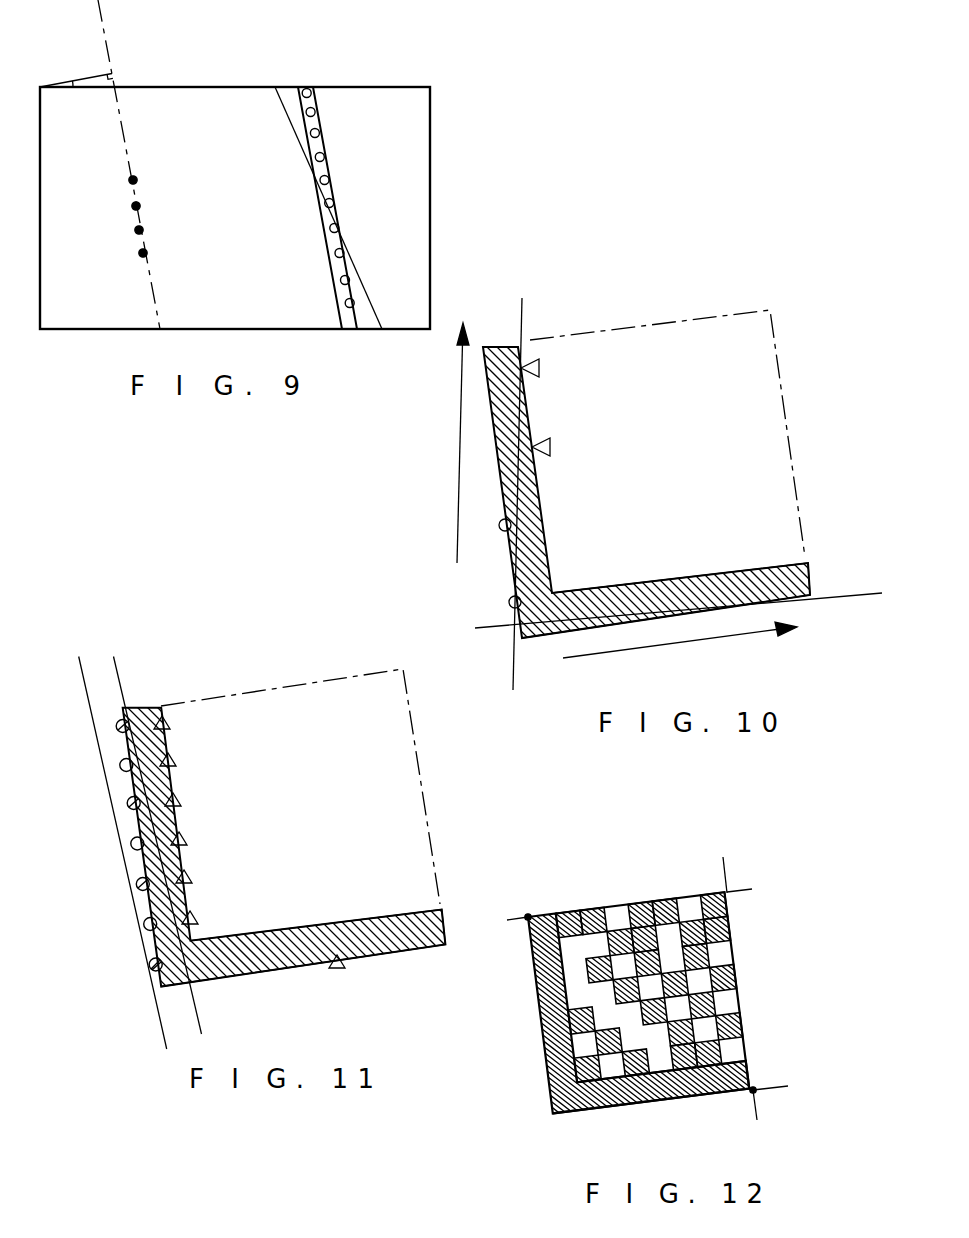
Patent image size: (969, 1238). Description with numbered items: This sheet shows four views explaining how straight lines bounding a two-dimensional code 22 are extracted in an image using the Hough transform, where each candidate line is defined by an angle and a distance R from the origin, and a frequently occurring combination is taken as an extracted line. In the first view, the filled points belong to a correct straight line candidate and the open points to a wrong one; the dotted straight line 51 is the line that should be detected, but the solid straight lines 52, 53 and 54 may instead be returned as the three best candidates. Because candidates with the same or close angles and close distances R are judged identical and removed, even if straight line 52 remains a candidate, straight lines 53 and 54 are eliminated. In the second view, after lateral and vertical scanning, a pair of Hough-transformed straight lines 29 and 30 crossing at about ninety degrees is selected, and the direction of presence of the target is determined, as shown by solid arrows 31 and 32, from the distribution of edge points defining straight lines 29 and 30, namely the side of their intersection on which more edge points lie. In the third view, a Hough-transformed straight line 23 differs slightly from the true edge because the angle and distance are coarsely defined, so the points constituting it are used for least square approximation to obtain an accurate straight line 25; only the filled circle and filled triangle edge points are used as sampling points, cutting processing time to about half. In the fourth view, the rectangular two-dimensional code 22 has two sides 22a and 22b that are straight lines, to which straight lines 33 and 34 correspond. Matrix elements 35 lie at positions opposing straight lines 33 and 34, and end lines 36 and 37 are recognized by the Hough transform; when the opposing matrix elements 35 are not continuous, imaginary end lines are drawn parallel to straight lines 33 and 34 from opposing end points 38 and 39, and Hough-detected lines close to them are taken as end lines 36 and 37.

In FIG. 9, the distance R is at (91, 74).
In FIG. 9, the straight line 51 is at (127, 142).
In FIG. 9, the straight line 52 is at (338, 140).
In FIG. 9, the straight line 53 is at (325, 238).
In FIG. 9, the straight line 54 is at (297, 143).
In FIG. 10, the two-dimensional code figure 22 is at (788, 423).
In FIG. 12, the two-dimensional code figure 22 is at (678, 967).
In FIG. 10, the side 22a is at (548, 508).
In FIG. 11, the side 22a is at (172, 781).
In FIG. 12, the side 22a is at (638, 967).
In FIG. 10, the side 22b is at (730, 565).
In FIG. 11, the side 22b is at (332, 924).
In FIG. 12, the side 22b is at (649, 1087).
In FIG. 10, the straight line 29 is at (513, 672).
In FIG. 10, the straight line 30 is at (852, 593).
In FIG. 10, the solid arrow 31 is at (457, 432).
In FIG. 10, the solid arrow 32 is at (717, 643).
In FIG. 11, the Hough-transformed straight line 23 is at (91, 695).
In FIG. 11, the accurate straight line 25 is at (115, 675).
In FIG. 12, the straight line 33 is at (527, 889).
In FIG. 12, the straight line 34 is at (760, 1085).
In FIG. 12, the matrix elements 35 is at (651, 987).
In FIG. 12, the end line 36 is at (729, 864).
In FIG. 12, the end line 37 is at (747, 890).
In FIG. 12, the end point 38 is at (528, 917).
In FIG. 12, the end point 39 is at (757, 1093).